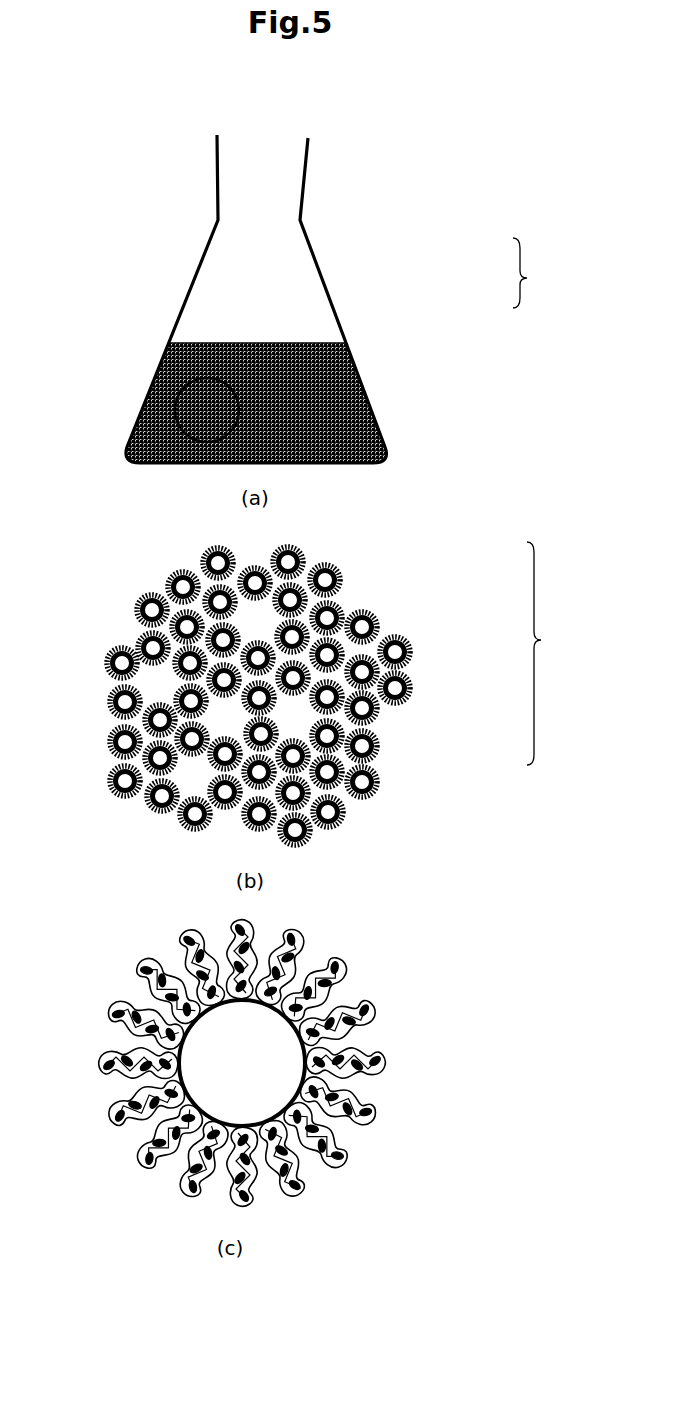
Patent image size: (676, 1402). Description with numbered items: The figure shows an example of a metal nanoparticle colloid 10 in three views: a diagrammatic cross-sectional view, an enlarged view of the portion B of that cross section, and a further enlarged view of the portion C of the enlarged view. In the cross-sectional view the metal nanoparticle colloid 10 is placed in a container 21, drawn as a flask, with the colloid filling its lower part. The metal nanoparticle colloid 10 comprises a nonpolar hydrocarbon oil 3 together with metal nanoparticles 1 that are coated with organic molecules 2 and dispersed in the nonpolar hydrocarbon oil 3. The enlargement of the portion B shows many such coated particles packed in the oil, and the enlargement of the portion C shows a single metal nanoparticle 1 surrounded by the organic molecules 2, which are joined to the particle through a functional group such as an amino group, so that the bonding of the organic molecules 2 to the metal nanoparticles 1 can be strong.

The metal nanoparticles 1 is at (346, 346).
The organic molecules 2 is at (297, 707).
The nonpolar hydrocarbon oil 3 is at (305, 342).
The metal nanoparticle colloid 10 is at (540, 501).
The container 21 is at (330, 276).
The portion B is at (172, 429).
The portion C is at (107, 793).